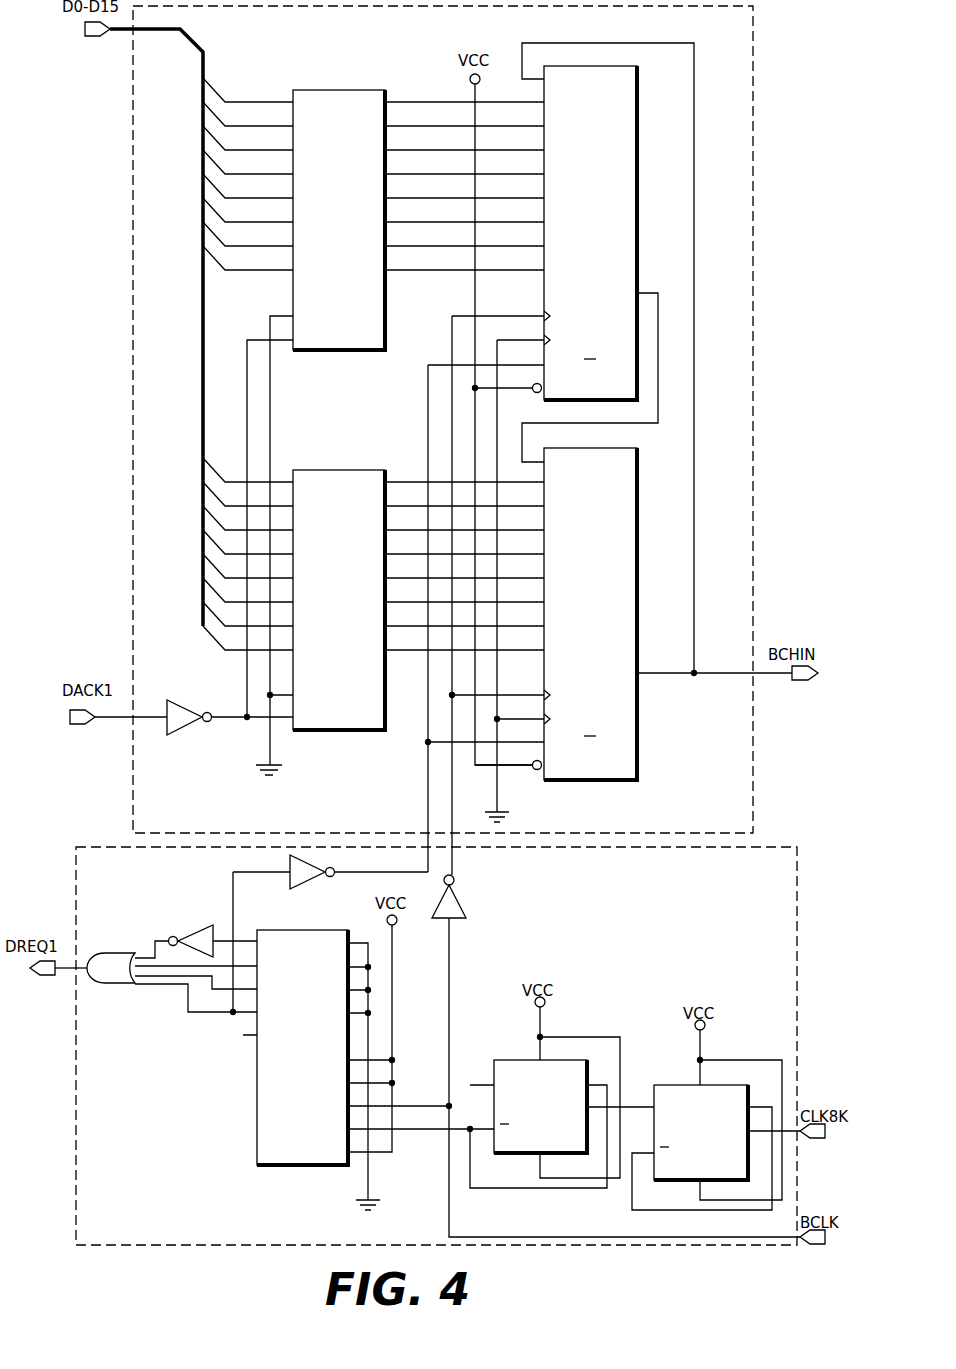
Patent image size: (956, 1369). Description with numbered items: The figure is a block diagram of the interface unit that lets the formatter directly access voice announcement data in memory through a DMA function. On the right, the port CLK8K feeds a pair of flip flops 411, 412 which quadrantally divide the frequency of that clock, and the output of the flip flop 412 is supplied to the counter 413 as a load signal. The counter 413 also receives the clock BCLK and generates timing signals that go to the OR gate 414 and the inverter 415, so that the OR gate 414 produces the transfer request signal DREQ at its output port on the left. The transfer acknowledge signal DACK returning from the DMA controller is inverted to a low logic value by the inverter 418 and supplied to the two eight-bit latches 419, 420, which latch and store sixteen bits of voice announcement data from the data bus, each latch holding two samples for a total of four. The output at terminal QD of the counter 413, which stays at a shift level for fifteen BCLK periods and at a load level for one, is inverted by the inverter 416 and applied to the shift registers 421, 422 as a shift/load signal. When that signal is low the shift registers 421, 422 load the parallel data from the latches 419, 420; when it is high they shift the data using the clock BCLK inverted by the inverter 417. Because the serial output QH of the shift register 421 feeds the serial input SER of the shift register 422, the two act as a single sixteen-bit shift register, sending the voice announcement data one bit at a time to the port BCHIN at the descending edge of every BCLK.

The flip flop 411 is at (667, 1083).
The flip flop 412 is at (508, 1058).
The counter 413 is at (300, 1167).
The OR gate 414 is at (112, 952).
The inverter 415 is at (195, 925).
The inverter 416 is at (308, 883).
The inverter 417 is at (458, 900).
The inverter 418 is at (200, 688).
The 8-bit latch 419 is at (337, 352).
The 8-bit latch 420 is at (337, 732).
The shift register 421 is at (638, 172).
The shift register 422 is at (587, 782).